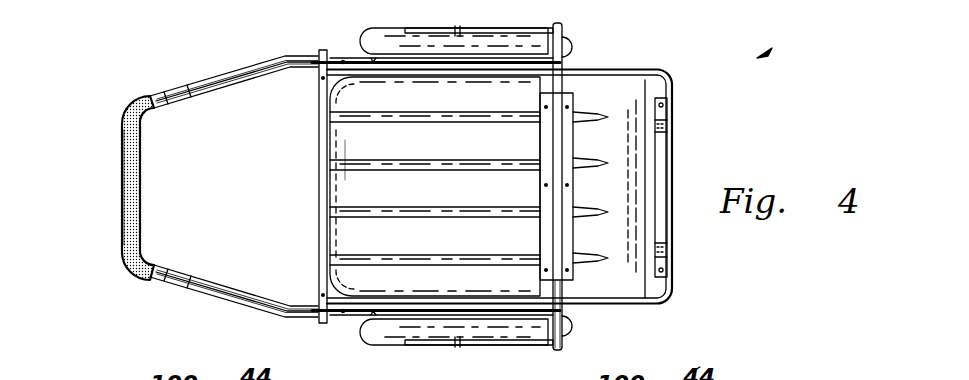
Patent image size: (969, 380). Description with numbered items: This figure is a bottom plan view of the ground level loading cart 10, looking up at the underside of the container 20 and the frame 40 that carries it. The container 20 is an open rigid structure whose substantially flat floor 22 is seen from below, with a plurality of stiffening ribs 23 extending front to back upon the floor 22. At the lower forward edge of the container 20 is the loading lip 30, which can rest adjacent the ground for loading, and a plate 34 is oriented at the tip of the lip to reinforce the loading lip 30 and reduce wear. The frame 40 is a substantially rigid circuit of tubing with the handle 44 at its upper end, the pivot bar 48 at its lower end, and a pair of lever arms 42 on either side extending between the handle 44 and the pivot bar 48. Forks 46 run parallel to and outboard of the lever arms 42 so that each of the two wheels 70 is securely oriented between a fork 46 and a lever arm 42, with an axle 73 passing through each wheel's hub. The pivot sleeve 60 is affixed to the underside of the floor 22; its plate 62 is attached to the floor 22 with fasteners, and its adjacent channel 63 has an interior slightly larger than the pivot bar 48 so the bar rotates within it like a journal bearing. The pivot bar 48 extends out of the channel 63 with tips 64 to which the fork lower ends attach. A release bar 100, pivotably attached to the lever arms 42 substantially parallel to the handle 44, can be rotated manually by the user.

The ground level loading cart 10 is at (762, 56).
The container 20 is at (642, 72).
The floor 22 is at (503, 153).
The stiffening ribs 23 is at (386, 196).
The loading lip 30 is at (672, 287).
The plate 34 is at (663, 145).
The frame 40 is at (182, 82).
The lever arms 42 is at (240, 76).
The handle 44 is at (140, 160).
The forks 46 is at (407, 30).
The pivot bar 48 is at (563, 292).
The pivot sleeve 60 is at (570, 97).
The plate 62 is at (575, 143).
The channel 63 is at (568, 238).
The tips 64 is at (560, 25).
The wheels 70 is at (360, 43).
The axle 73 is at (457, 32).
The release bar 100 is at (125, 208).